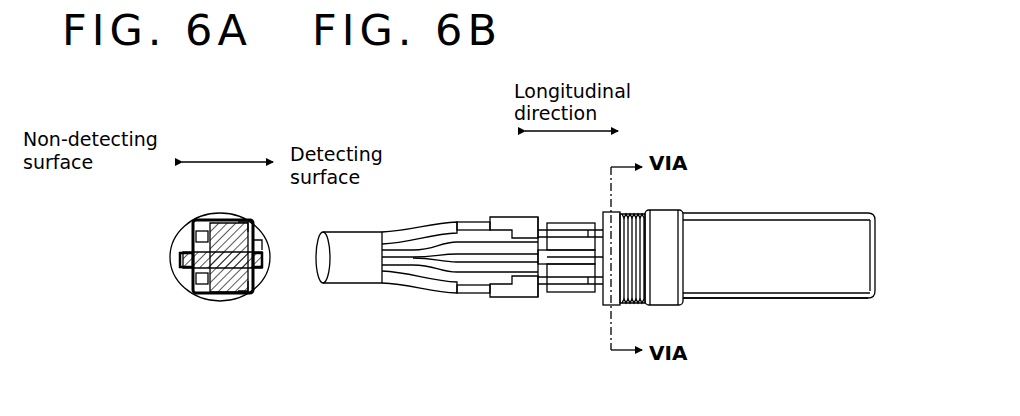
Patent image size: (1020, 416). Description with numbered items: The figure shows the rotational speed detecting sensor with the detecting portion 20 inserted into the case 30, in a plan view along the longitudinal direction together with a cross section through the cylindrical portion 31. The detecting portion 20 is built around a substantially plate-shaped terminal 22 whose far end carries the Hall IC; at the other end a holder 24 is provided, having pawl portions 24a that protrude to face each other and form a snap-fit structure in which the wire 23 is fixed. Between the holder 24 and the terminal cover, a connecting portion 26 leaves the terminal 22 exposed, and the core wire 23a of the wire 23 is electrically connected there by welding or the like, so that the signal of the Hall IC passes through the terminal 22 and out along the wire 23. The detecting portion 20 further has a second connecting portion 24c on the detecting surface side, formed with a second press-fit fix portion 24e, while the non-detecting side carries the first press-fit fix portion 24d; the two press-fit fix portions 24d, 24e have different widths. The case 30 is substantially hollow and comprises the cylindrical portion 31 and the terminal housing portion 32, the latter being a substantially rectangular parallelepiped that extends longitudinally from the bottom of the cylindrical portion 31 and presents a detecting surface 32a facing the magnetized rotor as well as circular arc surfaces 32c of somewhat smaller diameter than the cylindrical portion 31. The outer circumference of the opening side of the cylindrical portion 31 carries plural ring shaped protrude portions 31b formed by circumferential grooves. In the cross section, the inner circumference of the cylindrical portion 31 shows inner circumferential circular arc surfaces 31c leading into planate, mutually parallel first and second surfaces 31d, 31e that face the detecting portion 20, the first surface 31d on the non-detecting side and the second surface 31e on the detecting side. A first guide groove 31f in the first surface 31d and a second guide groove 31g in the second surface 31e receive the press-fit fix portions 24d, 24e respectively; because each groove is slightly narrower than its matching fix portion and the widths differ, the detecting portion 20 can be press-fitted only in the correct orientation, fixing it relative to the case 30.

In FIG. 6B, the detecting portion 20 is at (391, 236).
In FIG. 6B, the terminal 22 is at (460, 226).
In FIG. 6B, the wire 23 is at (432, 240).
In FIG. 6B, the core wire 23a is at (580, 229).
In FIG. 6B, the holder 24 is at (522, 216).
In FIG. 6B, the pawl portions 24a is at (478, 221).
In FIG. 6B, the second connecting portion 24c is at (585, 250).
In FIG. 6A, the first press-fit fix portion 24d is at (184, 270).
In FIG. 6A, the second press-fit fix portion 24e is at (252, 278).
In FIG. 6B, the connecting portion 26 is at (561, 223).
In FIG. 6B, the case 30 is at (840, 300).
In FIG. 6B, the cylindrical portion 31 is at (668, 213).
In FIG. 6B, the ring shaped protrude portions 31b is at (630, 215).
In FIG. 6A, the inner circumferential circular arc surfaces 31c is at (200, 217).
In FIG. 6A, the first surface 31d is at (182, 238).
In FIG. 6A, the second surface 31e is at (241, 219).
In FIG. 6A, the first guide groove 31f is at (184, 259).
In FIG. 6A, the second guide groove 31g is at (249, 247).
In FIG. 6B, the terminal housing portion 32 is at (800, 228).
In FIG. 6B, the detecting surface 32a is at (868, 250).
In FIG. 6B, the circular arc surfaces 32c is at (740, 219).